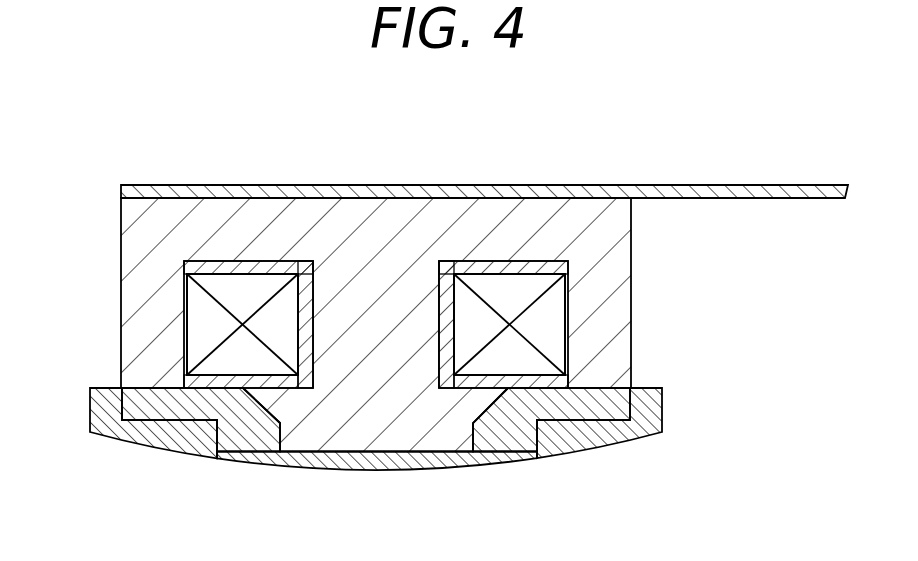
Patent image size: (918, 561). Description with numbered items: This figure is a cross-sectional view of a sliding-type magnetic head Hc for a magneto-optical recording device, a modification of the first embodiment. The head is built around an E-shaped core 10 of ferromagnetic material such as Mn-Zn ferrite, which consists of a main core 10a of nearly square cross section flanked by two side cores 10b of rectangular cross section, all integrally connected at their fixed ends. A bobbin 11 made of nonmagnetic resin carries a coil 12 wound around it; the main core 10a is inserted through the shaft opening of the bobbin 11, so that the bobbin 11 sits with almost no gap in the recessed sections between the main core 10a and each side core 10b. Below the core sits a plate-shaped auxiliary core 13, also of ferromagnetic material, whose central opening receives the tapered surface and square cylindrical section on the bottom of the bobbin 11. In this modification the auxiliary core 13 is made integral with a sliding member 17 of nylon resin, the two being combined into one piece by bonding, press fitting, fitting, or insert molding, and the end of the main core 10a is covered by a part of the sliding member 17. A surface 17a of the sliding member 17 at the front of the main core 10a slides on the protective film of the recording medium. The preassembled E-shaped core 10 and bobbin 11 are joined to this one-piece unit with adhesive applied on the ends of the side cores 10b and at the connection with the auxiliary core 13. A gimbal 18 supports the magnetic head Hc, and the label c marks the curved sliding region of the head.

The magnetic head Hc is at (468, 152).
The E-shaped core 10 is at (645, 272).
The main core 10a is at (367, 277).
The side cores 10b is at (135, 302).
The bobbin 11 is at (515, 263).
The coil 12 is at (550, 315).
The auxiliary core 13 is at (247, 435).
The sliding member 17 is at (595, 440).
The surface 17a is at (433, 472).
The curved surface c is at (338, 465).
The gimbal 18 is at (665, 185).